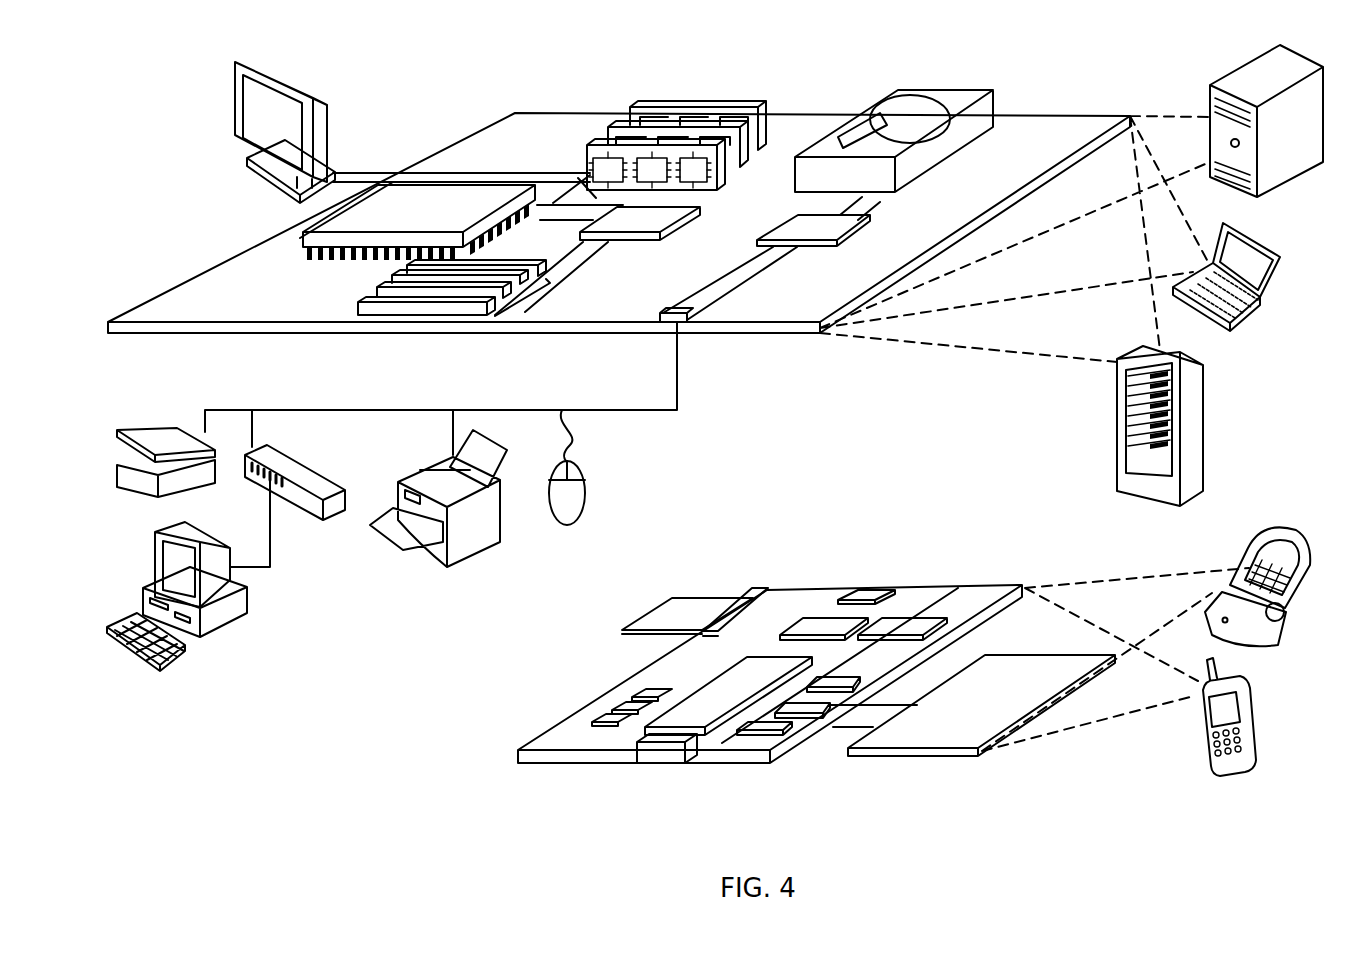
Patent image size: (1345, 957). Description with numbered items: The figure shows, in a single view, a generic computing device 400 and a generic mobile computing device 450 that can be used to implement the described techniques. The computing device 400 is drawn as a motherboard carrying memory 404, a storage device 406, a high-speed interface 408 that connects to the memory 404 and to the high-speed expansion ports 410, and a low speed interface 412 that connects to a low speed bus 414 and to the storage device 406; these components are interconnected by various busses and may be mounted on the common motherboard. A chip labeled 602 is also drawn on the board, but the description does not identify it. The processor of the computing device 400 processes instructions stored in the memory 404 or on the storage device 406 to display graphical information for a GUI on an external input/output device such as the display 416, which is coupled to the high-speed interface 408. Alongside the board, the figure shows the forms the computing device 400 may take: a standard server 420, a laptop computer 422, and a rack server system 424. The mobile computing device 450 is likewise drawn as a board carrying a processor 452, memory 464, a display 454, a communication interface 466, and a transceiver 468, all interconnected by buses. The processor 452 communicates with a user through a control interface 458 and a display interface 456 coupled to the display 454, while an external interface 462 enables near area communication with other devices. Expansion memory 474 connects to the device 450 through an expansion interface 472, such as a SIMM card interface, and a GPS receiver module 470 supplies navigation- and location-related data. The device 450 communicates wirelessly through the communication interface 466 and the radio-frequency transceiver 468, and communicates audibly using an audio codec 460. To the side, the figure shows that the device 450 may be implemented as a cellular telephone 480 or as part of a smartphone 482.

The computing device 400 is at (432, 84).
The memory 404 is at (652, 106).
The storage device 406 is at (888, 105).
The high-speed interface 408 is at (580, 222).
The high-speed expansion ports 410 is at (378, 298).
The low speed interface 412 is at (788, 220).
The low speed bus 414 is at (687, 320).
The display 416 is at (236, 63).
The standard server 420 is at (1212, 100).
The laptop computer 422 is at (1285, 255).
The rack server system 424 is at (1116, 452).
The mobile computer device 450 is at (493, 759).
The processor 452 is at (700, 717).
The display 454 is at (943, 738).
The display interface 456 is at (777, 732).
The control interface 458 is at (822, 705).
The audio codec 460 is at (835, 680).
The external interface 462 is at (663, 750).
The memory 464 is at (612, 710).
The communication interface 466 is at (823, 627).
The transceiver 468 is at (903, 625).
The GPS receiver module 470 is at (872, 588).
The expansion interface 472 is at (742, 598).
The expansion memory 474 is at (672, 598).
The cellular telephone 480 is at (1258, 545).
The smartphone 482 is at (1203, 728).
The processor 602 is at (300, 238).